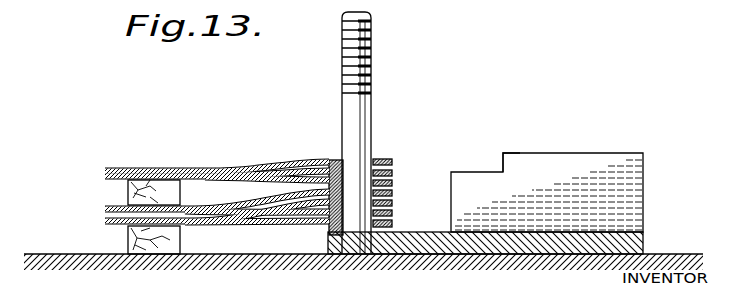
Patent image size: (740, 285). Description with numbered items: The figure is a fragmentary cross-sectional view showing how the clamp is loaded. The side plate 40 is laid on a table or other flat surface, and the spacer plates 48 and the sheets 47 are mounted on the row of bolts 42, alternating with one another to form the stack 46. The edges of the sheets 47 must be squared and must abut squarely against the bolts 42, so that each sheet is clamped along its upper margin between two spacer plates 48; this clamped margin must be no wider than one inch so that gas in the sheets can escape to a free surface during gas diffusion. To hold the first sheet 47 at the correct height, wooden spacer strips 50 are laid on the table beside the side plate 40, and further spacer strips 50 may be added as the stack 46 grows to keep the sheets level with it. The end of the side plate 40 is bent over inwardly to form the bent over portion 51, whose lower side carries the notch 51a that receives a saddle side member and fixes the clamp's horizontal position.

The side plate 40 is at (643, 243).
The bolts 42 is at (362, 110).
The stack 46 is at (217, 176).
The sheets 47 is at (293, 170).
The spacer plates 48 is at (393, 230).
The wooden spacer strips 50 is at (180, 192).
The bent over portion 51 is at (643, 178).
The notch 51a is at (503, 165).